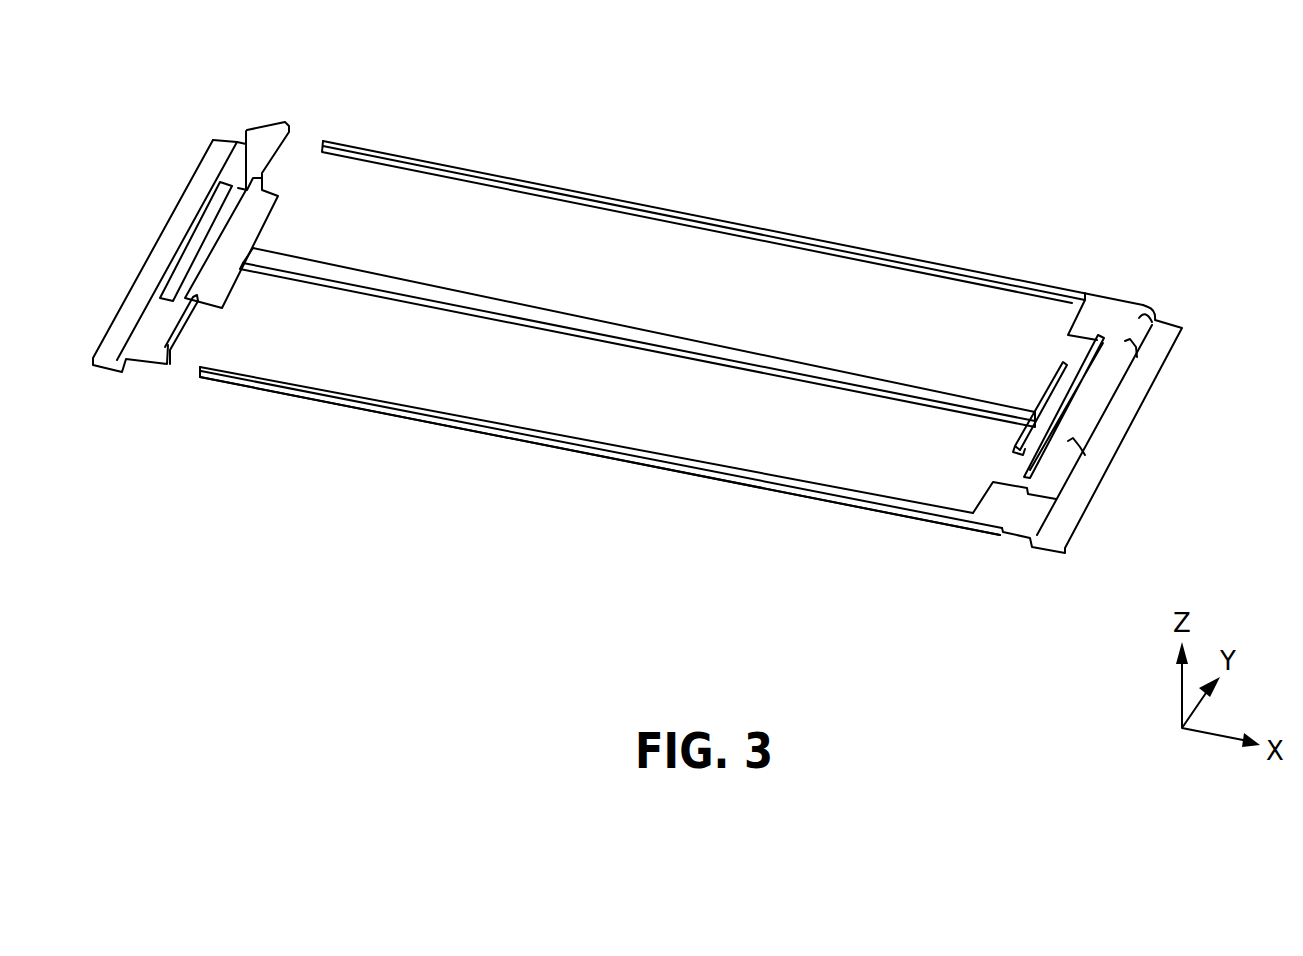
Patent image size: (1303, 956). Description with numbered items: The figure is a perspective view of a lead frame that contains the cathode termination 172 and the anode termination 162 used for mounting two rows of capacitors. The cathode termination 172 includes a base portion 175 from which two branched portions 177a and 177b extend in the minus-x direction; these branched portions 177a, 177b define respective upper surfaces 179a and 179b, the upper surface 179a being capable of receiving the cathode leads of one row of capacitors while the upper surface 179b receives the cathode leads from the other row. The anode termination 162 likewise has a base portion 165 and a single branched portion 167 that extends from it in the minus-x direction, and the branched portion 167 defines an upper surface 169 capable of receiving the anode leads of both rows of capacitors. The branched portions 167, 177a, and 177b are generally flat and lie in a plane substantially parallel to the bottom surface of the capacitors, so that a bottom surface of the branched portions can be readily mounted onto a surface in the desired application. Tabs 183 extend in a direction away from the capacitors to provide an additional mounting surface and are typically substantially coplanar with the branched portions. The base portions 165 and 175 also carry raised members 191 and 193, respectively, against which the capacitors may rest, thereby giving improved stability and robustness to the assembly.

The anode termination 162 is at (228, 121).
The base portion 165 is at (203, 313).
The branched portion 167 is at (575, 313).
The upper surface 169 is at (773, 350).
The cathode termination 172 is at (518, 464).
The base portion 175 is at (1148, 305).
The branched portion 177a is at (693, 462).
The branched portion 177b is at (838, 240).
The upper surface 179a is at (371, 388).
The upper surface 179b is at (515, 173).
The tabs 183 is at (156, 240).
The raised member 191 is at (275, 162).
The raised member 193 is at (1042, 390).